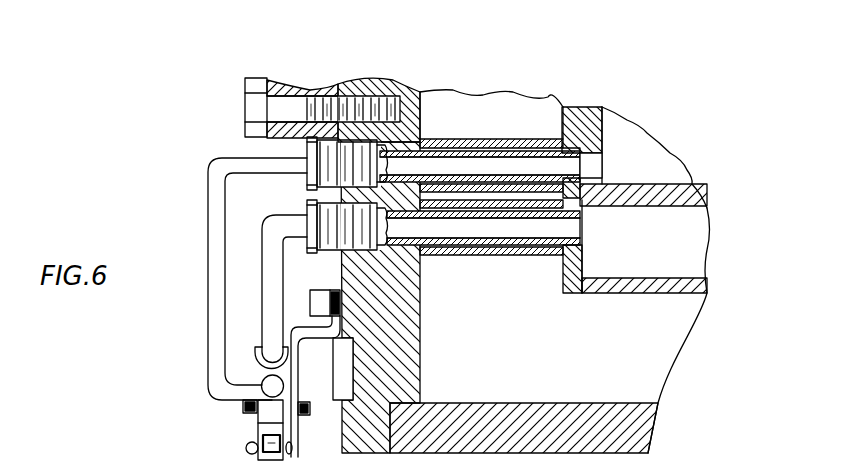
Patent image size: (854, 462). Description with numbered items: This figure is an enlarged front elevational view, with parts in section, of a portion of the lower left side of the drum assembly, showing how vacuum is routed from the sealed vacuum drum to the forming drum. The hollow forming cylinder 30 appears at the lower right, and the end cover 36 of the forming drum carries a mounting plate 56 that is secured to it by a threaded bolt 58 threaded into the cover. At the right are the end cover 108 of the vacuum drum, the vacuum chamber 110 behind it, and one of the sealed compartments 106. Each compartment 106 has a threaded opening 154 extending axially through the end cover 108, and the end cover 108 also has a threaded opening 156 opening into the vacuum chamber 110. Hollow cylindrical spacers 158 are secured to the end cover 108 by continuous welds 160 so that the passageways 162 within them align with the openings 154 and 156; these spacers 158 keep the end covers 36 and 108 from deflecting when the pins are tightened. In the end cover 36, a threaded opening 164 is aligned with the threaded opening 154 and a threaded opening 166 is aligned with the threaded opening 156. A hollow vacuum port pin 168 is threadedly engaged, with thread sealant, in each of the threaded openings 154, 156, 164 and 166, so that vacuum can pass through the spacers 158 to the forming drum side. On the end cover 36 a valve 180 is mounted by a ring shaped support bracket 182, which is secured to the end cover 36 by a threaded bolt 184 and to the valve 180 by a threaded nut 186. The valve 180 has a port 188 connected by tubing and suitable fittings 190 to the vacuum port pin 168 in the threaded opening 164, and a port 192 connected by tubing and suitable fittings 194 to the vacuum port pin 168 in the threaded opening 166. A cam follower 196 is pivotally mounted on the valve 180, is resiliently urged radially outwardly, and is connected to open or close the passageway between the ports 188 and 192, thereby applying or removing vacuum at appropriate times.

The hollow forming cylinder 30 is at (527, 415).
The end cover 36 is at (408, 362).
The mounting plate 56 is at (277, 77).
The threaded bolt 58 is at (245, 105).
The compartment 106 is at (688, 232).
The end cover 108 is at (605, 111).
The vacuum chamber 110 is at (667, 178).
The threaded opening 154 is at (582, 243).
The threaded opening 156 is at (575, 152).
The hollow cylindrical spacer 158 is at (540, 143).
The continuous weld 160 is at (585, 118).
The passageway 162 is at (470, 160).
The threaded opening 164 is at (362, 254).
The threaded opening 166 is at (416, 120).
The hollow vacuum port pin 168 is at (485, 150).
The valve 180 is at (260, 367).
The ring shaped support bracket 182 is at (298, 368).
The threaded bolt 184 is at (312, 300).
The threaded nut 186 is at (303, 417).
The port 188 is at (257, 352).
The tubing and fittings 190 is at (270, 248).
The port 192 is at (284, 390).
The tubing and fittings 194 is at (212, 210).
The cam follower 196 is at (257, 435).